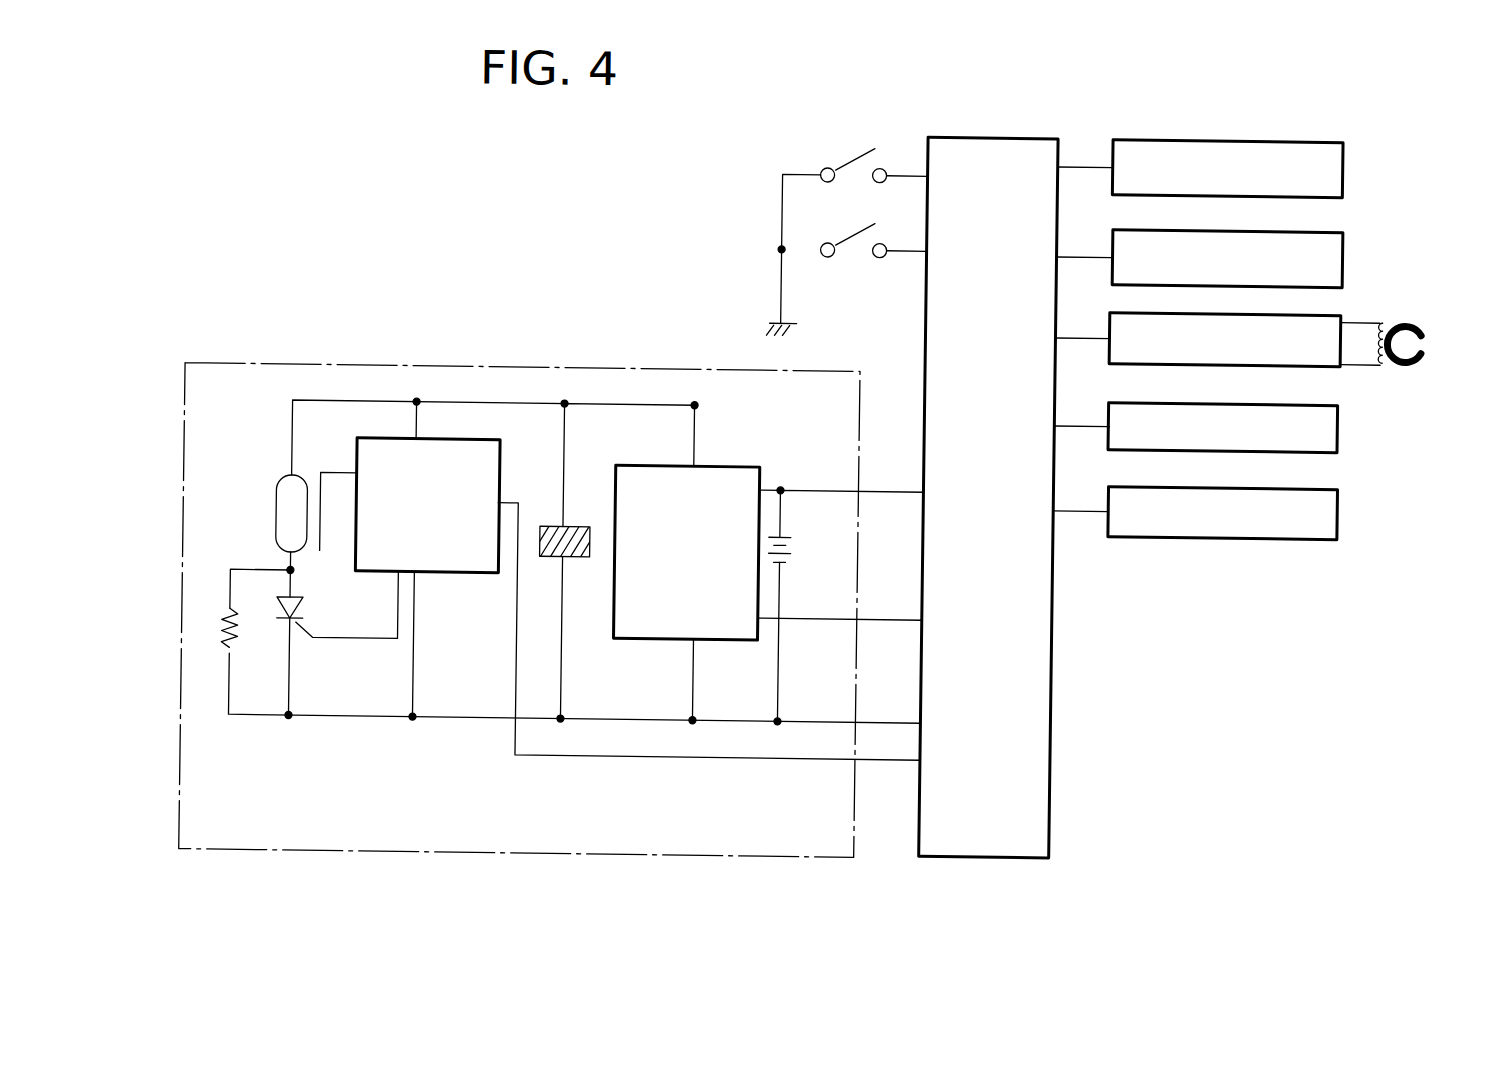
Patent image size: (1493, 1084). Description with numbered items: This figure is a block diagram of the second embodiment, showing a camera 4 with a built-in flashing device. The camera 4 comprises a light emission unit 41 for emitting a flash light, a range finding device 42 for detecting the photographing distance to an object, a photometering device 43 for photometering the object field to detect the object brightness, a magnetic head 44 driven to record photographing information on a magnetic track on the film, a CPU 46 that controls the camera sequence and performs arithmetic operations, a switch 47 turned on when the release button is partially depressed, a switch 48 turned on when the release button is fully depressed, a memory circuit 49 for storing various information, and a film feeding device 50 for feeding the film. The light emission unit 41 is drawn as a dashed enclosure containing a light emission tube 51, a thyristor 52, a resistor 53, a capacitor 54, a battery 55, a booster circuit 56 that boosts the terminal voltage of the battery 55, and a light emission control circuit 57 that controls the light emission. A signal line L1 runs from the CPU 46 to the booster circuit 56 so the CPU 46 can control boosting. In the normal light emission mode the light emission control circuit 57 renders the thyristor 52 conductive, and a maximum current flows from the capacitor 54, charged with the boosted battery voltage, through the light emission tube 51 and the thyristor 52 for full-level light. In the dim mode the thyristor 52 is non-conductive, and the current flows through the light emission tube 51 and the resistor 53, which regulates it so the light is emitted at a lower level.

The camera 4 is at (1130, 643).
The light emission unit 41 is at (261, 363).
The range finding device 42 is at (1340, 159).
The photometering device 43 is at (1341, 244).
The magnetic head 44 is at (1415, 363).
The CPU 46 is at (994, 132).
The switch 47 is at (849, 146).
The switch 48 is at (843, 258).
The memory circuit 49 is at (1338, 421).
The film feeding device 50 is at (1339, 502).
The light emission tube 51 is at (276, 518).
The thyristor 52 is at (302, 632).
The resistor 53 is at (220, 626).
The capacitor 54 is at (580, 566).
The battery 55 is at (799, 547).
The booster circuit 56 is at (734, 460).
The light emission control circuit 57 is at (474, 440).
The signal line L1 is at (895, 608).